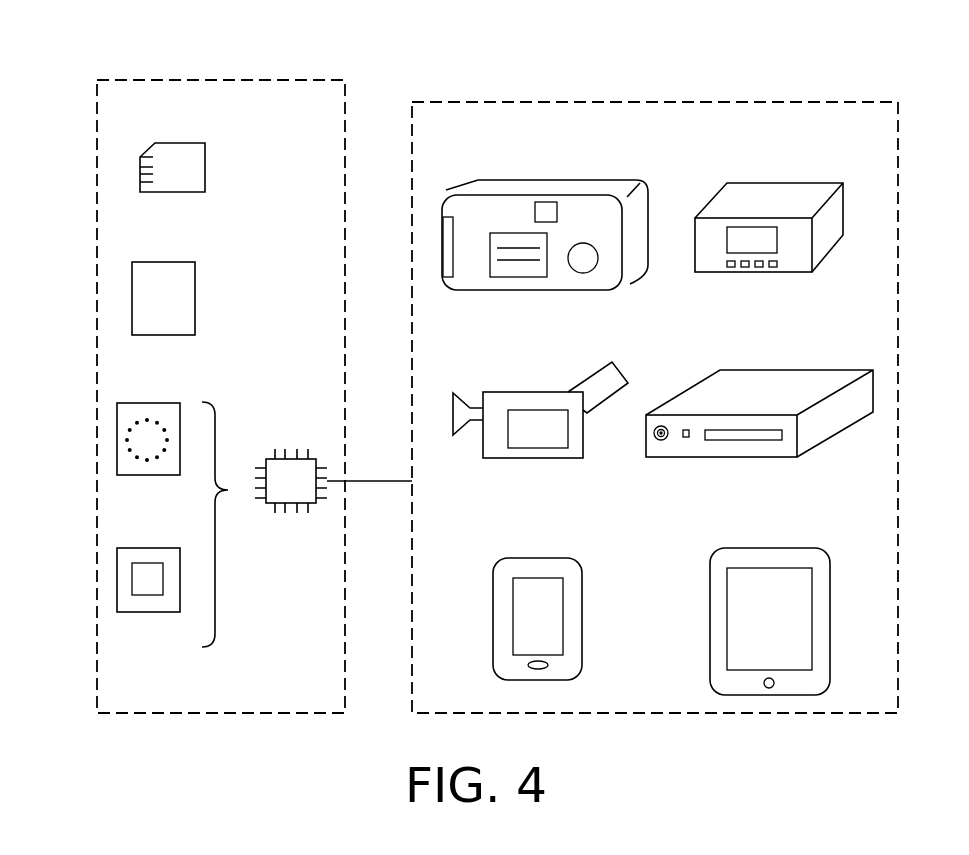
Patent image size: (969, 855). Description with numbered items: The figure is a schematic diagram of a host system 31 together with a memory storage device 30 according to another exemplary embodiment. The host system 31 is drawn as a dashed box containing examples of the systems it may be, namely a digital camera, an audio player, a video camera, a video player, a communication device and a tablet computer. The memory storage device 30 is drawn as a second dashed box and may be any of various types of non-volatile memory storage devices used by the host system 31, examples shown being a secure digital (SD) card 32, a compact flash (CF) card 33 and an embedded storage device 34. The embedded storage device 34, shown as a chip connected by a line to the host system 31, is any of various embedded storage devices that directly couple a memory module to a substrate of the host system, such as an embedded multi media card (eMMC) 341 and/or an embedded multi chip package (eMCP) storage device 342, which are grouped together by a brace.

The memory storage device 30 is at (229, 78).
The host system 31 is at (652, 100).
The secure digital (SD) card 32 is at (140, 175).
The compact flash (CF) card 33 is at (132, 300).
The embedded storage device 34 is at (292, 457).
The embedded multi media card (eMMC) 341 is at (117, 441).
The embedded multi chip package (eMCP) storage device 342 is at (117, 580).